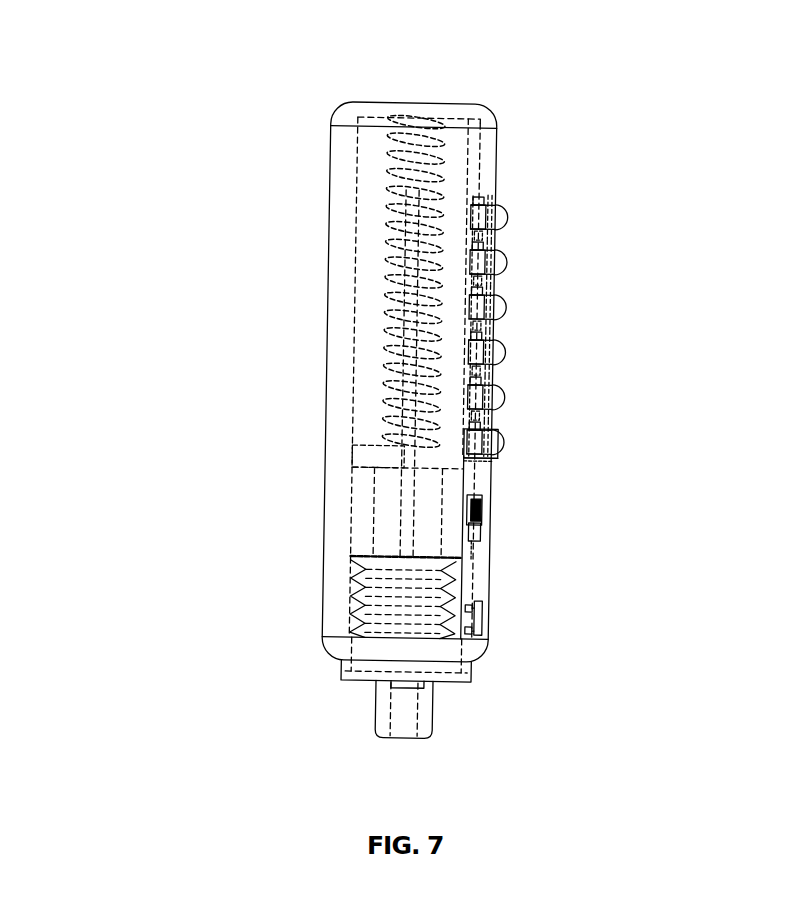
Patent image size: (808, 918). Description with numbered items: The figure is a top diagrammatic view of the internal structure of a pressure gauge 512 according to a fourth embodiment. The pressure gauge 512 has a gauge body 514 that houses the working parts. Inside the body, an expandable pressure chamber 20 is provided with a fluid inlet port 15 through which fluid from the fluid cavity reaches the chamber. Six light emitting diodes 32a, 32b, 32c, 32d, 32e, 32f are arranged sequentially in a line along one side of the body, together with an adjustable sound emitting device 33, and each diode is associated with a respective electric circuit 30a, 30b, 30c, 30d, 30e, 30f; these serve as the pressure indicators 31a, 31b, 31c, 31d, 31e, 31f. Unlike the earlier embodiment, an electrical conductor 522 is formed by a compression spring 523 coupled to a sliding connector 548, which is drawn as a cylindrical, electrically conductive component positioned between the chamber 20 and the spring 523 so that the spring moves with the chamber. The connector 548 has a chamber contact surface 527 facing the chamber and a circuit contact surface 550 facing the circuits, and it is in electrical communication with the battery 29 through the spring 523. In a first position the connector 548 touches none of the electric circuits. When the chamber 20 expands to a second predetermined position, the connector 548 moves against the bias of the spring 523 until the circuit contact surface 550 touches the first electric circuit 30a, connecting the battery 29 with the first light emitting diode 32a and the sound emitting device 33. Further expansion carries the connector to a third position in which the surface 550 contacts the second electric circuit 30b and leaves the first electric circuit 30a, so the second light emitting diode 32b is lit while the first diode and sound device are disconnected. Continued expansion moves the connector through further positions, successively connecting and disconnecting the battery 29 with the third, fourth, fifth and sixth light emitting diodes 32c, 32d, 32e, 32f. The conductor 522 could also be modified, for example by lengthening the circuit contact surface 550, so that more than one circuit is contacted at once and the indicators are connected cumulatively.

The pressure gauge 512 is at (401, 421).
The gauge body 514 is at (482, 392).
The electrical conductor 522 is at (385, 357).
The compression spring 523 is at (383, 428).
The sliding connector 548 is at (372, 506).
The expandable pressure chamber 20 is at (355, 618).
The fluid inlet port 15 is at (441, 745).
The sixth light emitting diode 32f is at (596, 219).
The pressure indicator 31f is at (501, 217).
The sixth electric circuit 30f is at (540, 232).
The fifth light emitting diode 32e is at (602, 266).
The pressure indicator 31e is at (500, 262).
The fifth electric circuit 30e is at (542, 278).
The fourth light emitting diode 32d is at (602, 313).
The pressure indicator 31d is at (500, 307).
The fourth electric circuit 30d is at (541, 324).
The third light emitting diode 32c is at (599, 361).
The pressure indicator 31c is at (499, 352).
The third electric circuit 30c is at (540, 372).
The second light emitting diode 32b is at (600, 410).
The pressure indicator 31b is at (498, 397).
The second electric circuit 30b is at (541, 421).
The first light emitting diode 32a is at (598, 457).
The pressure indicator 31a is at (497, 442).
The first electric circuit 30a is at (540, 476).
The adjustable sound emitting device 33 is at (612, 492).
The circuit contact surface 550 is at (541, 512).
The battery 29 is at (538, 557).
The chamber contact surface 527 is at (545, 658).